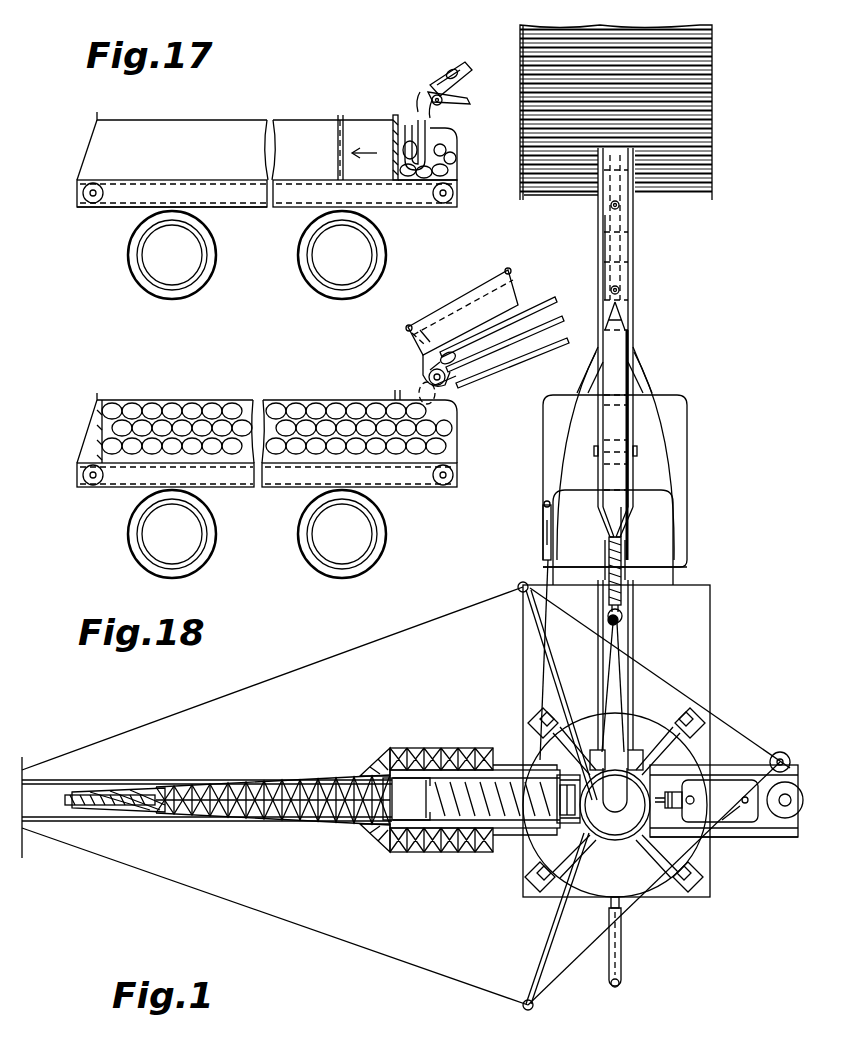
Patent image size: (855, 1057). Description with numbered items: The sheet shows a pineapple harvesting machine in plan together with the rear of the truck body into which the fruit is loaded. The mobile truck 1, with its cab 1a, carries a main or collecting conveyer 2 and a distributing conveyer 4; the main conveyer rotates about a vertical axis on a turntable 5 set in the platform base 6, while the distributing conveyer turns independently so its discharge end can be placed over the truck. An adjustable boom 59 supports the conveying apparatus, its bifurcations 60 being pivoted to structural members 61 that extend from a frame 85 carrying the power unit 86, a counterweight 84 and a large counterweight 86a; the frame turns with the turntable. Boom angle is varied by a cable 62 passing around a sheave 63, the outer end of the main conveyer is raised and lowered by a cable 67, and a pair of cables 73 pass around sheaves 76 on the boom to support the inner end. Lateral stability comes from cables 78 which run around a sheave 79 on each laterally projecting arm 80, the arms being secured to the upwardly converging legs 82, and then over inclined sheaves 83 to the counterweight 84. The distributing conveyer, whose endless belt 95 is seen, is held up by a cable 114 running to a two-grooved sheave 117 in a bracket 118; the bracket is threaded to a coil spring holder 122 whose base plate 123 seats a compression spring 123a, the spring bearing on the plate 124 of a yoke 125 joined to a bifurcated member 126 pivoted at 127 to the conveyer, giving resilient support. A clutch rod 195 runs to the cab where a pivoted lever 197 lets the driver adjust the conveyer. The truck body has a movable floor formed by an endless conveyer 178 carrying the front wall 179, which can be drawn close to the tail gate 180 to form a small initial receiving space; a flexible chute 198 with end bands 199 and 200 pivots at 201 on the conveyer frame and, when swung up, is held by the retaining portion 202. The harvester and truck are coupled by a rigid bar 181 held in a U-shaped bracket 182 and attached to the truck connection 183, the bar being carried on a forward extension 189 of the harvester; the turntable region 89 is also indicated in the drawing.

In FIG. 1, the mobile truck 1 is at (700, 592).
In FIG. 1, the cab 1a is at (660, 545).
In FIG. 1, the main or collecting conveyer 2 is at (60, 792).
In FIG. 17, the distributing conveyer 4 is at (445, 66).
In FIG. 1, the distributing conveyer 4 is at (635, 282).
In FIG. 1, the turntable 5 is at (648, 880).
In FIG. 1, the platform base 6 is at (700, 655).
In FIG. 1, the adjustable boom 59 is at (295, 826).
In FIG. 1, the bifurcations 60 is at (432, 748).
In FIG. 1, the structural members 61 is at (505, 765).
In FIG. 1, the cable 62 is at (203, 812).
In FIG. 1, the sheave 63 is at (158, 812).
In FIG. 1, the cable 67 is at (65, 806).
In FIG. 1, the cables 73 is at (413, 777).
In FIG. 1, the sheaves 76 is at (378, 762).
In FIG. 1, the cables 78 is at (447, 615).
In FIG. 1, the sheave 79 is at (520, 586).
In FIG. 1, the arm 80 is at (555, 672).
In FIG. 1, the upwardly converging legs 82 is at (582, 720).
In FIG. 1, the inclined sheaves 83 is at (782, 752).
In FIG. 1, the counterweight 84 is at (783, 760).
In FIG. 1, the frame 85 is at (735, 837).
In FIG. 1, the power unit 86 is at (725, 770).
In FIG. 1, the counterweight 86a is at (785, 818).
In FIG. 1, the turntable 89 is at (615, 840).
In FIG. 17, the endless belt 95 is at (466, 83).
In FIG. 1, the endless belt 95 is at (613, 355).
In FIG. 1, the cable 114 is at (618, 640).
In FIG. 1, the sheave 117 is at (622, 616).
In FIG. 1, the bracket 118 is at (622, 624).
In FIG. 1, the coil spring holder 122 is at (612, 612).
In FIG. 1, the base plate 123 is at (624, 520).
In FIG. 1, the compression spring 123a is at (625, 580).
In FIG. 1, the plate 124 is at (622, 608).
In FIG. 1, the yoke 125 is at (608, 575).
In FIG. 1, the bifurcated member 126 is at (603, 520).
In FIG. 1, the pivot connection 127 is at (634, 450).
In FIG. 17, the endless conveyer 178 is at (420, 196).
In FIG. 18, the endless conveyer 178 is at (290, 468).
In FIG. 1, the endless conveyer 178 is at (690, 55).
In FIG. 17, the front wall 179 is at (395, 130).
In FIG. 18, the front wall 179 is at (104, 400).
In FIG. 17, the tail gate 180 is at (455, 160).
In FIG. 18, the tail gate 180 is at (455, 438).
In FIG. 1, the tail gate 180 is at (562, 193).
In FIG. 1, the rigid bar 181 is at (634, 243).
In FIG. 1, the U-shaped bracket 182 is at (634, 293).
In FIG. 1, the connection 183 is at (622, 203).
In FIG. 1, the forward extension 189 is at (640, 370).
In FIG. 1, the rod 195 is at (545, 622).
In FIG. 1, the pivoted lever or handle 197 is at (543, 508).
In FIG. 17, the flexible chute 198 is at (450, 132).
In FIG. 18, the flexible chute 198 is at (470, 298).
In FIG. 18, the metal band 199 is at (415, 330).
In FIG. 18, the metal band 200 is at (510, 270).
In FIG. 17, the pivot 201 is at (420, 90).
In FIG. 18, the pivot 201 is at (425, 367).
In FIG. 18, the upstanding retaining portion 202 is at (528, 315).